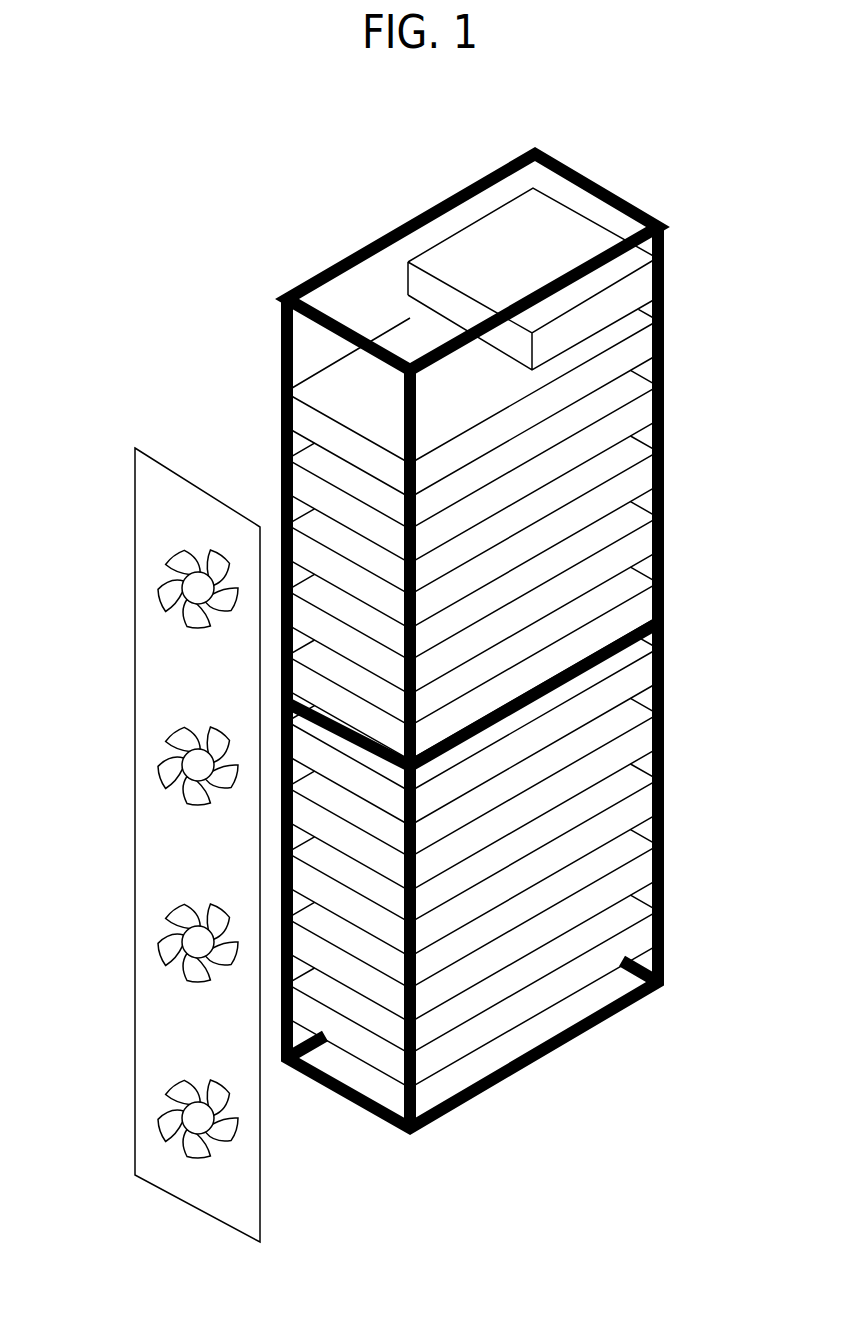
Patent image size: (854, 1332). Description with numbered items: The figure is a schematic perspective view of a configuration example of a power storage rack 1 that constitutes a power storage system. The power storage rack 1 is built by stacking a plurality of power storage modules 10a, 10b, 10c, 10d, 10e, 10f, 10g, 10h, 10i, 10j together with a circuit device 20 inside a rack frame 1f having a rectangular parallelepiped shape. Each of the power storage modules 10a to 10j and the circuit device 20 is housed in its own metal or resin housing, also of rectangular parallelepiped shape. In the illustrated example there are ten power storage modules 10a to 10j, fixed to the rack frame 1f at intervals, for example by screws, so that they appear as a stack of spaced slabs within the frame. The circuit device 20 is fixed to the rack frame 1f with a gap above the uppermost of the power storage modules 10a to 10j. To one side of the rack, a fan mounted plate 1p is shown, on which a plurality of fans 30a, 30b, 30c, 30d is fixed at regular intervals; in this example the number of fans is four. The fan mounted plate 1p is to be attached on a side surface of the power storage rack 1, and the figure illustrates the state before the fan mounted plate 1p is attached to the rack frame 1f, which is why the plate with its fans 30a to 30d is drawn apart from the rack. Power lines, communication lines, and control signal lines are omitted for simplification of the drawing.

The power storage rack 1 is at (515, 612).
The rack frame 1f is at (325, 272).
The fan mounted plate 1p is at (194, 486).
The circuit device 20 is at (638, 280).
The power storage module 10a is at (638, 345).
The power storage module 10b is at (638, 410).
The power storage module 10c is at (638, 476).
The power storage module 10d is at (638, 542).
The power storage module 10e is at (638, 608).
The power storage module 10f is at (638, 673).
The power storage module 10g is at (638, 739).
The power storage module 10h is at (638, 804).
The power storage module 10i is at (638, 870).
The power storage module 10j is at (638, 935).
The fan 30a is at (157, 588).
The fan 30b is at (157, 765).
The fan 30c is at (157, 942).
The fan 30d is at (157, 1118).